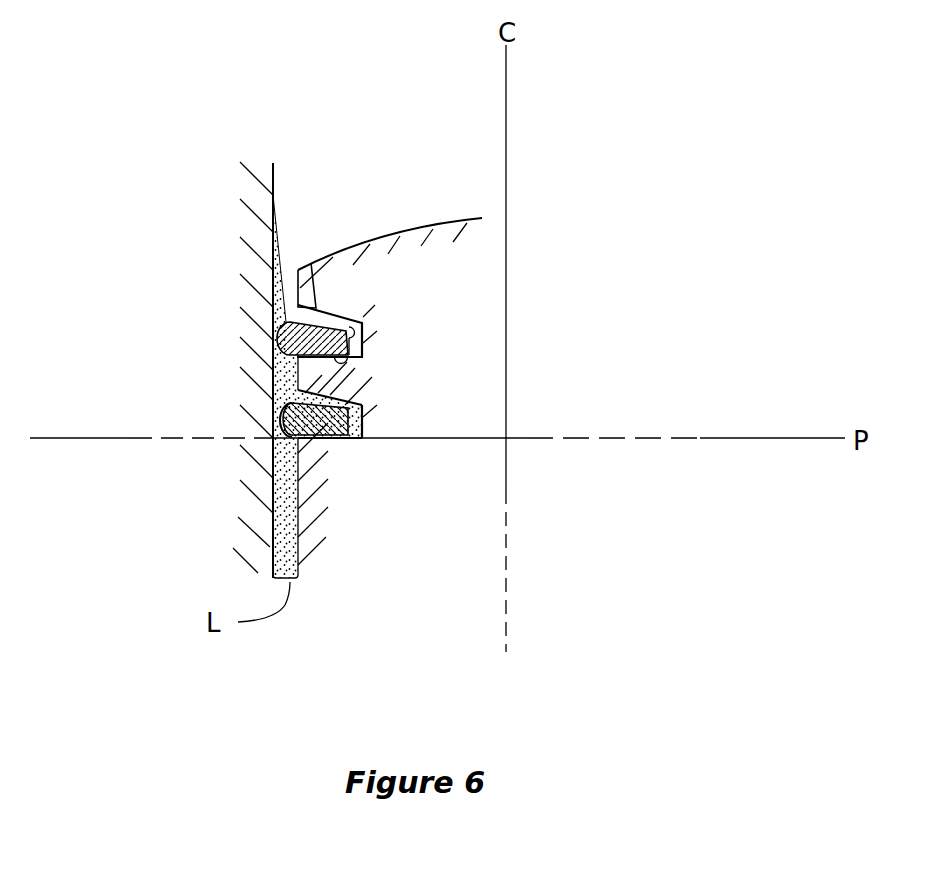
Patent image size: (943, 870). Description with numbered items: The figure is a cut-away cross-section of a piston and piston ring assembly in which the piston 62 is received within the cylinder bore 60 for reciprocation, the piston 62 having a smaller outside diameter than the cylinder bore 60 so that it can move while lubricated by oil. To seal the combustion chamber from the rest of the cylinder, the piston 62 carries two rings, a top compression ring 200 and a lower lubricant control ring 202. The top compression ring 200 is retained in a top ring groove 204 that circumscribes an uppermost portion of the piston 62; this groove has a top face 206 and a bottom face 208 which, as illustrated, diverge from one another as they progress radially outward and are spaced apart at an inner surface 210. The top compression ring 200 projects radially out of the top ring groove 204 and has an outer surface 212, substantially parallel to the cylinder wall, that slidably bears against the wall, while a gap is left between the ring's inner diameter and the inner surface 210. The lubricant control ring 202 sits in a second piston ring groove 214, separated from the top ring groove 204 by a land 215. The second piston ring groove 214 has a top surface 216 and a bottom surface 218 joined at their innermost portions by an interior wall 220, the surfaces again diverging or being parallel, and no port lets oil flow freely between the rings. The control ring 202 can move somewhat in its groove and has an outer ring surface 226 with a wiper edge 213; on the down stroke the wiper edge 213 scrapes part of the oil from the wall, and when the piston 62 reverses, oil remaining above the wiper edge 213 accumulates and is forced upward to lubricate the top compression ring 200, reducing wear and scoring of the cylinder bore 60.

The cylinder bore 60 is at (274, 189).
The piston 62 is at (440, 228).
The top compression ring 200 is at (312, 263).
The lower lubricant control ring 202 is at (336, 441).
The top ring groove 204 is at (296, 306).
The top face 206 is at (326, 316).
The bottom face 208 is at (335, 373).
The inner surface 210 is at (363, 326).
The outer surface 212 is at (273, 348).
The wiper edge 213 is at (280, 412).
The second piston ring groove 214 is at (298, 392).
The land 215 is at (340, 372).
The top surface 216 is at (362, 393).
The bottom surface 218 is at (355, 440).
The interior wall 220 is at (363, 407).
The outer ring surface 226 is at (272, 452).